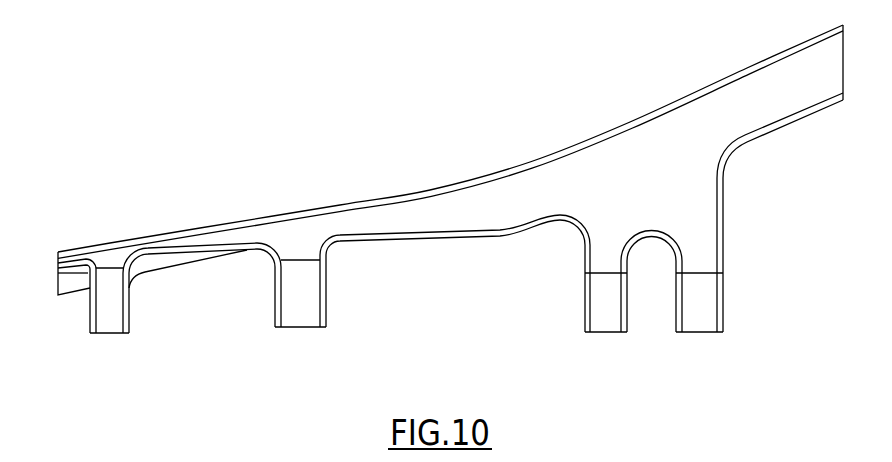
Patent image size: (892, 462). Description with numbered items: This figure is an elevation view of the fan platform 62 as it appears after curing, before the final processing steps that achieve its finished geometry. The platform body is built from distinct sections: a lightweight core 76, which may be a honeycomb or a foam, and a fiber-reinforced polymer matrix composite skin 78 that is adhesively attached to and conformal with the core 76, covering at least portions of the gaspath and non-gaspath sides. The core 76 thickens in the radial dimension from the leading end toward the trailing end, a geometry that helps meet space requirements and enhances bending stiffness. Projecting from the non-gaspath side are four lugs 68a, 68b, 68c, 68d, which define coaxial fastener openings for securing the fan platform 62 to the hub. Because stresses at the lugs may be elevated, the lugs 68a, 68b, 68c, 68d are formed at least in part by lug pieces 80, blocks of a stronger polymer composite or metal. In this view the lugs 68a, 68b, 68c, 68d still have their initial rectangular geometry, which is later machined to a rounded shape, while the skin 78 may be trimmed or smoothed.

The fan platform 62 is at (235, 348).
The lug 68a is at (85, 335).
The lug 68b is at (341, 315).
The lug 68c is at (571, 317).
The lug 68d is at (737, 317).
The core 76 is at (703, 201).
The fiber-reinforced polymer matrix composite skin 78 is at (653, 110).
The lug piece 80 is at (107, 326).